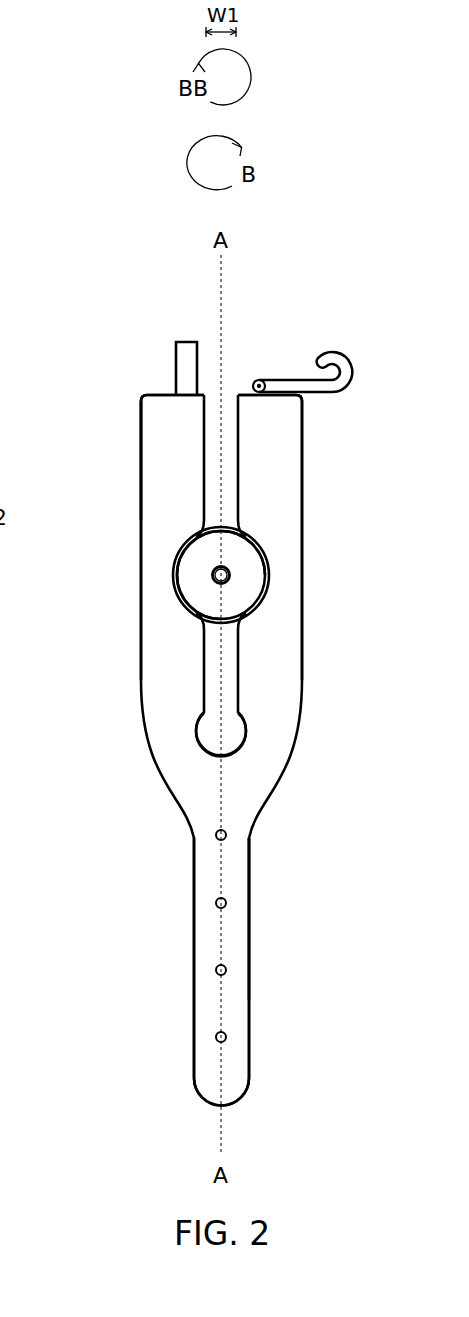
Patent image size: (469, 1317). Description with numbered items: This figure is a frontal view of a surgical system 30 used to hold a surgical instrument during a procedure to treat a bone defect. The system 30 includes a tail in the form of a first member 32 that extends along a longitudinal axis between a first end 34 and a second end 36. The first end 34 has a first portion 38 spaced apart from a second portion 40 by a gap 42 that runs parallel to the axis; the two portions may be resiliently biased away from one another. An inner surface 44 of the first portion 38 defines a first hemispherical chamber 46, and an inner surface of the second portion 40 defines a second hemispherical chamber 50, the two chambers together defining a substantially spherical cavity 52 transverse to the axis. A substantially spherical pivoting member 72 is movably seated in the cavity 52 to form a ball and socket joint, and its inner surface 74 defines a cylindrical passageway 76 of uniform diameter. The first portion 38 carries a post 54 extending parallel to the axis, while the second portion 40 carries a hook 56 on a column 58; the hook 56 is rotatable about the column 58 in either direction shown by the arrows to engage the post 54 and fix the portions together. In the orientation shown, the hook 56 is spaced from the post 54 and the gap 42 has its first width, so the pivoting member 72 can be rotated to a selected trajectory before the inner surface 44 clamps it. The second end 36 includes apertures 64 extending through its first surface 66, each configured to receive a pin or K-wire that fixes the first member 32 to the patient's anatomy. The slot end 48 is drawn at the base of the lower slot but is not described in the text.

The surgical system 30 is at (381, 755).
The first member 32 is at (111, 646).
The first end 34 is at (141, 421).
The second end 36 is at (249, 1035).
The first portion 38 is at (150, 455).
The second portion 40 is at (288, 468).
The gap 42 is at (231, 397).
The inner surface 44 is at (215, 674).
The first hemispherical chamber 46 is at (180, 527).
The slot end 48 is at (232, 661).
The second hemispherical chamber 50 is at (280, 554).
The spherical cavity 52 is at (176, 615).
The post 54 is at (178, 357).
The hook 56 is at (353, 361).
The column 58 is at (263, 379).
The aperture 64 is at (216, 839).
The first surface 66 is at (249, 866).
The pivoting member 72 is at (242, 548).
The inner surface 74 is at (213, 572).
The passageway 76 is at (237, 590).